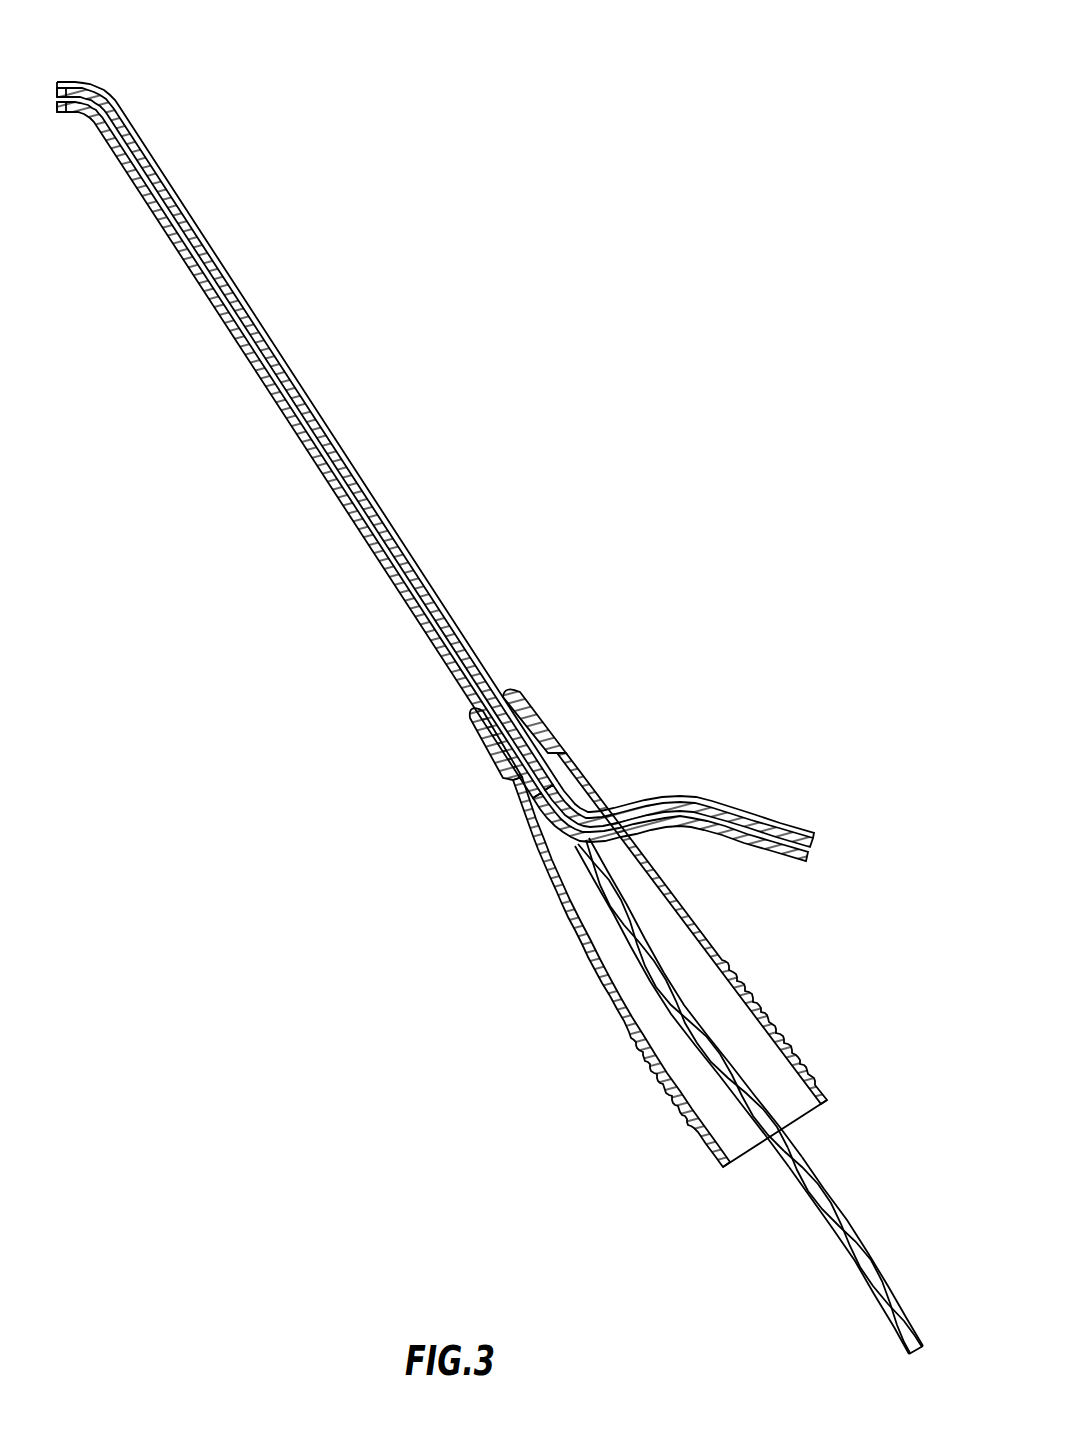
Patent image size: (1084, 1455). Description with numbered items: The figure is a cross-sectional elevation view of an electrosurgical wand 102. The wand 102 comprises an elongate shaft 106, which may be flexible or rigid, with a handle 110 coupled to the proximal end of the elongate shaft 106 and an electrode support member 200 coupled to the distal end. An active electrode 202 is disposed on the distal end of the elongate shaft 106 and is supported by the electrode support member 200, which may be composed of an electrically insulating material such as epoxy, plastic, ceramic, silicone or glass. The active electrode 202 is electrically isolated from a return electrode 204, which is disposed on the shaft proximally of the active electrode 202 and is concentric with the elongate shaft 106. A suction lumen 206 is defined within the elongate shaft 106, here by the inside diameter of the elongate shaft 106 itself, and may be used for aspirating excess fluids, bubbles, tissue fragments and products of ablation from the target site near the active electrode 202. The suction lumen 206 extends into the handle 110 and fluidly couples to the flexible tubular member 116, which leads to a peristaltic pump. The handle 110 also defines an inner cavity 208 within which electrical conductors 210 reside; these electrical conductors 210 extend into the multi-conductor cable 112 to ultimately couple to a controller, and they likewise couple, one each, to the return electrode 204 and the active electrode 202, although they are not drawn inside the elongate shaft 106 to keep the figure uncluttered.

The wand 102 is at (294, 650).
The elongate shaft 106 is at (318, 413).
The handle 110 is at (502, 779).
The multi-conductor cable 112 is at (822, 1178).
The flexible tubular member 116 is at (730, 808).
The electrode support member 200 is at (76, 82).
The active electrode 202 is at (65, 81).
The return electrode 204 is at (110, 95).
The suction lumen 206 is at (386, 518).
The inner cavity 208 is at (660, 918).
The electrical conductors 210 is at (607, 889).